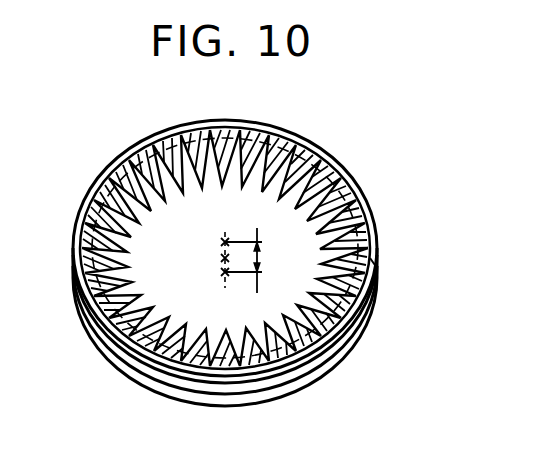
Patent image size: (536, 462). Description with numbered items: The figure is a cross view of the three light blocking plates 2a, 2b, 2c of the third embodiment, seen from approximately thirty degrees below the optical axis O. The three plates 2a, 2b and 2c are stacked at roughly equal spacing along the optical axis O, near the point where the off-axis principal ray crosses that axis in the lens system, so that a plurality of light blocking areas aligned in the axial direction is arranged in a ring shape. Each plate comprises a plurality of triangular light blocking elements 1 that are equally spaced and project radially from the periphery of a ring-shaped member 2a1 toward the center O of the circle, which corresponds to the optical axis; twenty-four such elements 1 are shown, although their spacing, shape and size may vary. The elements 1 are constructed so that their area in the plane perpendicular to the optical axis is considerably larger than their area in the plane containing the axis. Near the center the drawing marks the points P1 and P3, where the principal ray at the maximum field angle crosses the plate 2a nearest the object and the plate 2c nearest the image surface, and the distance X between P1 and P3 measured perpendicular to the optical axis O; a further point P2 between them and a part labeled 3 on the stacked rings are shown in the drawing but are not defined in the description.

The light blocking element 1 is at (331, 175).
The light blocking plate 2a is at (230, 380).
The light blocking plate 2b is at (183, 386).
The light blocking plate 2c is at (310, 384).
The side wall 3 is at (162, 376).
The ring-shaped member 2a1 is at (366, 262).
The crossing point of principal ray with plate 2a P1 is at (225, 275).
The point P2 is at (221, 257).
The crossing point of principal ray with plate 2c P3 is at (225, 239).
The optical axis O is at (221, 262).
The distance between P1 and P3 X is at (268, 260).